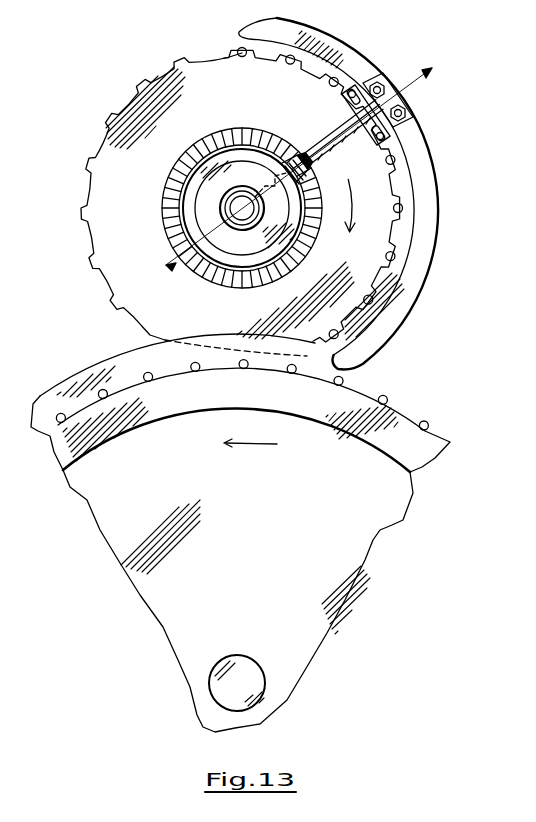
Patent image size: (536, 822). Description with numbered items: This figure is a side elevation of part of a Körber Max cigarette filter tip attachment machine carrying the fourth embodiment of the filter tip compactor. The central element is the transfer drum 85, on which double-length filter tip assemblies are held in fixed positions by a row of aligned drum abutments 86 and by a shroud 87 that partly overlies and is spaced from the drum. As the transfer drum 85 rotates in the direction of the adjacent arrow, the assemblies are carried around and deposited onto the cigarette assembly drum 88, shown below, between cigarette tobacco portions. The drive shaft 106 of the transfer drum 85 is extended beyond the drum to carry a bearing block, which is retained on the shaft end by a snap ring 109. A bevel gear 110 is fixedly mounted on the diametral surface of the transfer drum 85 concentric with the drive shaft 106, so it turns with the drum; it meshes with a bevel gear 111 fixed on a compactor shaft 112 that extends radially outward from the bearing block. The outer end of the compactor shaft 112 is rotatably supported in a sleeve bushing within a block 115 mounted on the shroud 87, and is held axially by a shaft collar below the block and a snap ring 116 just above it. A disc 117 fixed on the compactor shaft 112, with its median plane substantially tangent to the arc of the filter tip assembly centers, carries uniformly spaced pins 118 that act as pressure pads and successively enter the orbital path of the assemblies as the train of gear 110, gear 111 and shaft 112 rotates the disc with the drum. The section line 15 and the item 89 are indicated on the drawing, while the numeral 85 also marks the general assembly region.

The section line 15- 15 is at (432, 68).
The transfer drum 85 is at (300, 329).
The drum abutments 86 is at (196, 44).
The shroud 87 is at (406, 311).
The cigarette assembly drum 88 is at (402, 511).
The arcuate platform 89 is at (63, 386).
The drive shaft 106 is at (228, 216).
The snap ring 109 is at (232, 210).
The bevel gear 110 is at (312, 234).
The bevel gear 111 is at (306, 176).
The compactor shaft 112 is at (333, 134).
The block 115 is at (383, 76).
The snap ring 116 is at (392, 88).
The disc 117 is at (382, 139).
The pins 118 is at (349, 99).